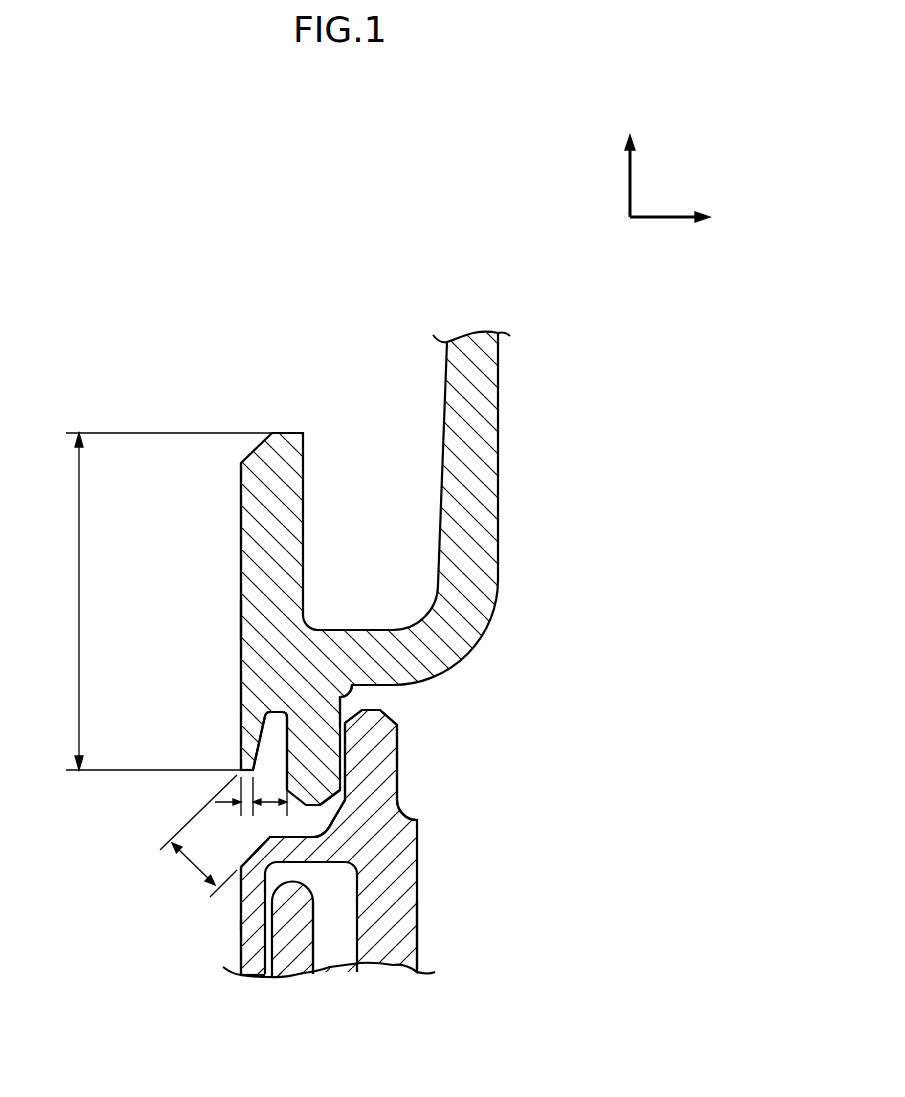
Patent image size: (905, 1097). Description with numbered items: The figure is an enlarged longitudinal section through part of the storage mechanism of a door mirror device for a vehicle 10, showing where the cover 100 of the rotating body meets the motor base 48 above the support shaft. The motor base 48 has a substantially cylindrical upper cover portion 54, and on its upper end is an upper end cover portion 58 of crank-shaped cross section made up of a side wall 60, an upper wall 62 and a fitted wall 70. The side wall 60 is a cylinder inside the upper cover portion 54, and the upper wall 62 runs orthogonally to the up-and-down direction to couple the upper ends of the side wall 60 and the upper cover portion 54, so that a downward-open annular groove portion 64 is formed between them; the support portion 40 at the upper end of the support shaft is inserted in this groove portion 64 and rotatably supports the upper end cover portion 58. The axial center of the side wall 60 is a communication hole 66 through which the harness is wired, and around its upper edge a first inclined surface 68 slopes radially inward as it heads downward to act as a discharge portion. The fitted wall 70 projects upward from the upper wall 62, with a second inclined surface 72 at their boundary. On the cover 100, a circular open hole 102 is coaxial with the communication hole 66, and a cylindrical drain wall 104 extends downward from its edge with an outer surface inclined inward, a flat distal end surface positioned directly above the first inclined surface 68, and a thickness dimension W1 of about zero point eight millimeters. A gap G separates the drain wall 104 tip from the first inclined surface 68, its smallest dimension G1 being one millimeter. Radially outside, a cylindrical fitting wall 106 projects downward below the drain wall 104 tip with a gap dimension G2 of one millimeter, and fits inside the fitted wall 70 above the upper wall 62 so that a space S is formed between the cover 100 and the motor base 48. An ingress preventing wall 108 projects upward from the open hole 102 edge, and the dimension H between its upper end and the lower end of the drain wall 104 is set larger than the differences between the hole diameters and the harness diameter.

The door mirror device for a vehicle 10 is at (286, 280).
The cover 100 is at (444, 408).
The ingress preventing wall 108 is at (241, 550).
The open hole 102 is at (241, 662).
The drain wall 104 is at (265, 714).
The fitting wall 106 is at (343, 697).
The fitted wall 70 is at (398, 752).
The second inclined surface 72 is at (340, 815).
The upper wall 62 is at (327, 830).
The first inclined surface 68 is at (345, 863).
The upper end cover portion 58 is at (242, 912).
The side wall 60 is at (242, 945).
The communication hole 66 is at (243, 968).
The upper cover portion 54 is at (420, 932).
The motor base 48 is at (422, 960).
The support portion 40 is at (313, 945).
The groove portion 64 is at (343, 957).
The dimension between ingress preventing wall upper end and drain wall lower end H is at (79, 599).
The thickness dimension of drain wall W1 is at (243, 815).
The gap G is at (255, 828).
The smallest dimension of gap G1 is at (190, 870).
The gap dimension between fitting wall and drain wall G2 is at (240, 760).
The space S is at (343, 790).